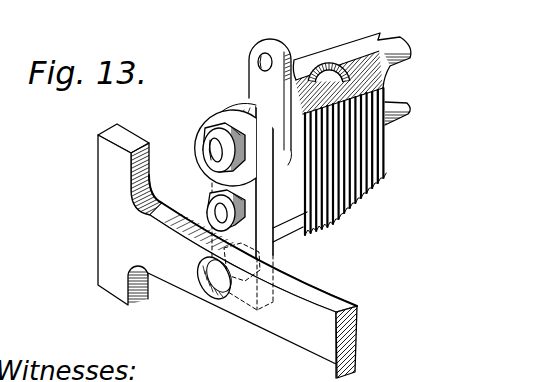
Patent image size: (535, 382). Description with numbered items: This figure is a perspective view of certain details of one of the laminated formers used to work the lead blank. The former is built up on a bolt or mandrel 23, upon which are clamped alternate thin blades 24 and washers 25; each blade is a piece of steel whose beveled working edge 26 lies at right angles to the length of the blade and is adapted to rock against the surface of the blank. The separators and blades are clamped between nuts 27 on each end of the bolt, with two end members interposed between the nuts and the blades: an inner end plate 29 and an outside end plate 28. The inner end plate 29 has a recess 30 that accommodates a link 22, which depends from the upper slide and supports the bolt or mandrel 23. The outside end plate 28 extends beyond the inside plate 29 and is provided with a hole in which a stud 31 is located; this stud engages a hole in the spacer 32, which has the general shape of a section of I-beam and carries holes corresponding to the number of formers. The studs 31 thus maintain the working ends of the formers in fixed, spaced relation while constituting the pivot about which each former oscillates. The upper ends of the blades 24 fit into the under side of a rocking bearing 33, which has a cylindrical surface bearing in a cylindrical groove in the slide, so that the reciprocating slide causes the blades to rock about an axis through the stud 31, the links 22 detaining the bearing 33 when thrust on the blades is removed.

The link 22 is at (283, 44).
The bolt or mandrel 23 is at (397, 106).
The blade 24 is at (337, 214).
The washer 25 is at (384, 172).
The beveled working edge 26 is at (380, 190).
The nut 27 is at (210, 193).
The outside end plate 28 is at (277, 248).
The inner end plate 29 is at (247, 102).
The recess 30 is at (291, 150).
The stud 31 is at (213, 300).
The spacer 32 is at (100, 212).
The rocking bearing 33 is at (360, 40).